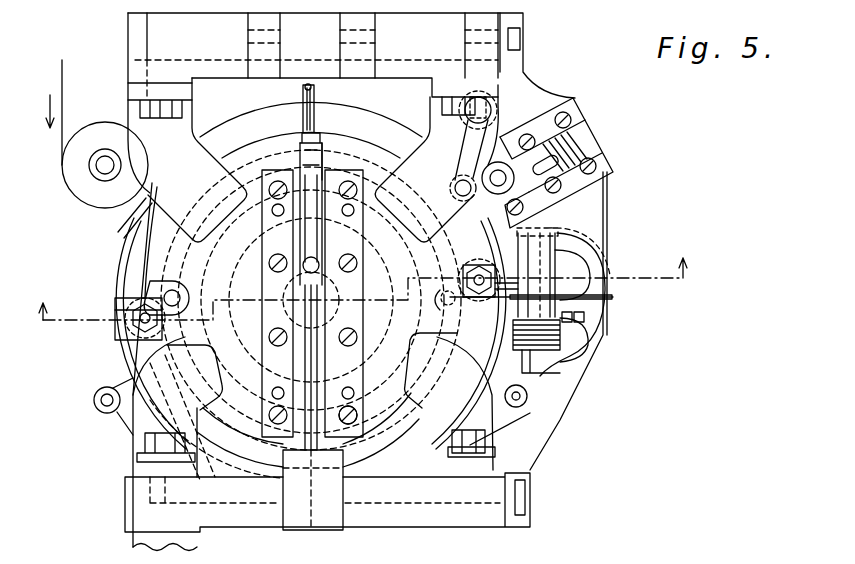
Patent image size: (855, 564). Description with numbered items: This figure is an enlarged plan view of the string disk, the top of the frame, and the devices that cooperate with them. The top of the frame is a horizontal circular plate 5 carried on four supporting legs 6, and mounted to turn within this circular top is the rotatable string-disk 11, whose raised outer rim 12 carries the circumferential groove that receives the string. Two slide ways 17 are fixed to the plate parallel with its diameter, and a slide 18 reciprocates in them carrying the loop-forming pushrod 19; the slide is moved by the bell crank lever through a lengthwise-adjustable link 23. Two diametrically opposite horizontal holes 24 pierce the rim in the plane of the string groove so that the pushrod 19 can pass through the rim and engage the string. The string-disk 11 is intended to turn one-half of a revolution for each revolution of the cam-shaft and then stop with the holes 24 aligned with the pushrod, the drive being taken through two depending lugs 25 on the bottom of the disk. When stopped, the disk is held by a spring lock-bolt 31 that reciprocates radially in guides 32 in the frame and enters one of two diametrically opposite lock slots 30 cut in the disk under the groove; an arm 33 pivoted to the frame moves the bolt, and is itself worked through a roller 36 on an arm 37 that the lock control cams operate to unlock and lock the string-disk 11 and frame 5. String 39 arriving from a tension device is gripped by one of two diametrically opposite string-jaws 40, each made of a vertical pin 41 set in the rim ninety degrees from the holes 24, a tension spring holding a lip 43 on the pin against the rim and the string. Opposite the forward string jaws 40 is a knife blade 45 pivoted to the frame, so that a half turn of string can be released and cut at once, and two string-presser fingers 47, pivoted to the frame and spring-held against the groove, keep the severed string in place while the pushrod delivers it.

The horizontal circular plate 5 is at (603, 222).
The supporting legs 6 is at (361, 276).
The rotatable string-disk 11 is at (128, 262).
The raised outer rim 12 is at (311, 275).
The slide ways 17 is at (262, 285).
The slide 18 is at (314, 270).
The loop-forming pushrod 19 is at (357, 410).
The link 23 is at (309, 83).
The horizontal holes 24 is at (294, 126).
The depending lugs 25 is at (174, 296).
The lock slots 30 is at (476, 262).
The spring lock-bolt 31 is at (550, 221).
The guides 32 is at (573, 107).
The arm 33 is at (502, 162).
The roller 36 is at (455, 184).
The arm 37 is at (466, 133).
The string 39 is at (62, 72).
The string-jaws 40 is at (122, 336).
The pin 41 is at (143, 304).
The lip 43 is at (118, 310).
The knife blade 45 is at (613, 298).
The string-presser fingers 47 is at (128, 420).